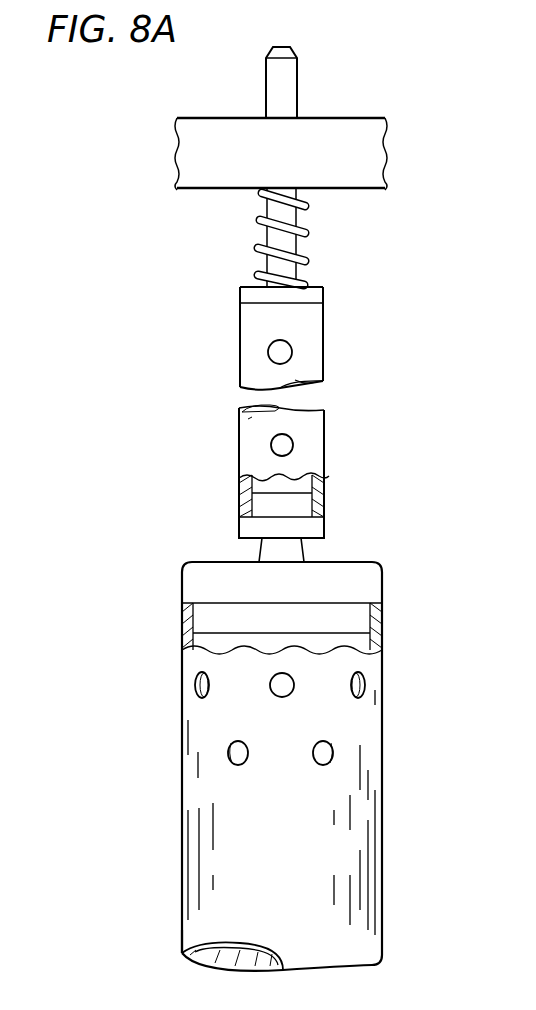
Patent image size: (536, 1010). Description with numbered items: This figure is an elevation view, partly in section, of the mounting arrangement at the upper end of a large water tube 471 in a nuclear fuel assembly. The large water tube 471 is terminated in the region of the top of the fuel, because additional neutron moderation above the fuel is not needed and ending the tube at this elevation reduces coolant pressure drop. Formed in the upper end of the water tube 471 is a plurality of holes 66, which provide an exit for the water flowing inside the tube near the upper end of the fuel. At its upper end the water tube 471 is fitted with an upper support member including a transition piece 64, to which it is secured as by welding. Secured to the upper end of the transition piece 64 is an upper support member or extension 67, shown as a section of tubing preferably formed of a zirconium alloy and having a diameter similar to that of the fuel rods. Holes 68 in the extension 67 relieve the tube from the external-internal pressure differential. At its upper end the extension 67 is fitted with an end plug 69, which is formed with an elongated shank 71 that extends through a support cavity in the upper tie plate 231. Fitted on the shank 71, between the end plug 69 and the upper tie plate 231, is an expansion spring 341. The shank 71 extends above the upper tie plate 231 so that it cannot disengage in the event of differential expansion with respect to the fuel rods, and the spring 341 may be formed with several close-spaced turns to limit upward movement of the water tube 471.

The upper tie plate 231 is at (382, 163).
The expansion spring 341 is at (260, 245).
The elongated shank 71 is at (305, 248).
The end plug 69 is at (318, 290).
The holes 68 is at (288, 350).
The upper support member or extension 67 is at (327, 443).
The transition piece 64 is at (362, 562).
The holes 66 is at (330, 745).
The large water tube 471 is at (182, 928).